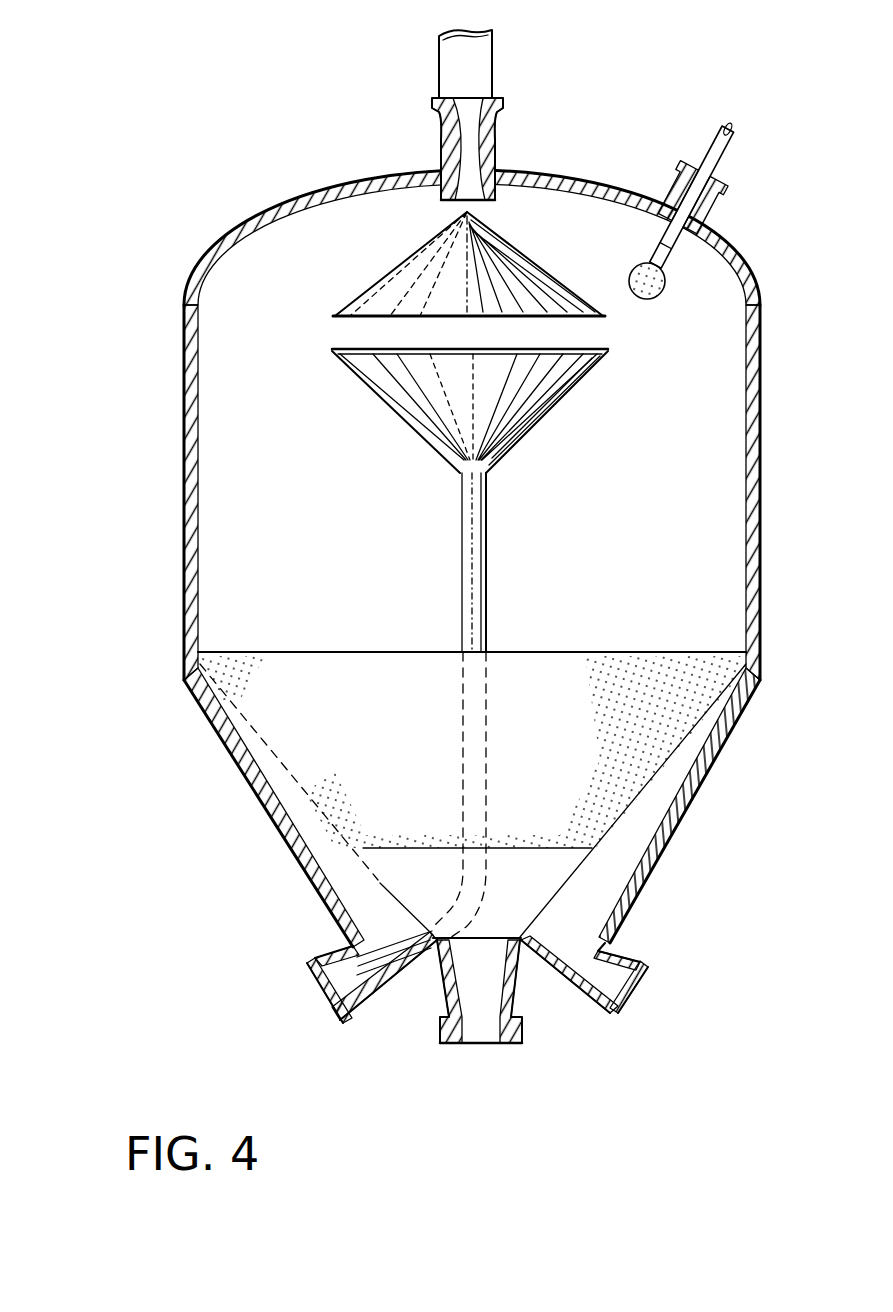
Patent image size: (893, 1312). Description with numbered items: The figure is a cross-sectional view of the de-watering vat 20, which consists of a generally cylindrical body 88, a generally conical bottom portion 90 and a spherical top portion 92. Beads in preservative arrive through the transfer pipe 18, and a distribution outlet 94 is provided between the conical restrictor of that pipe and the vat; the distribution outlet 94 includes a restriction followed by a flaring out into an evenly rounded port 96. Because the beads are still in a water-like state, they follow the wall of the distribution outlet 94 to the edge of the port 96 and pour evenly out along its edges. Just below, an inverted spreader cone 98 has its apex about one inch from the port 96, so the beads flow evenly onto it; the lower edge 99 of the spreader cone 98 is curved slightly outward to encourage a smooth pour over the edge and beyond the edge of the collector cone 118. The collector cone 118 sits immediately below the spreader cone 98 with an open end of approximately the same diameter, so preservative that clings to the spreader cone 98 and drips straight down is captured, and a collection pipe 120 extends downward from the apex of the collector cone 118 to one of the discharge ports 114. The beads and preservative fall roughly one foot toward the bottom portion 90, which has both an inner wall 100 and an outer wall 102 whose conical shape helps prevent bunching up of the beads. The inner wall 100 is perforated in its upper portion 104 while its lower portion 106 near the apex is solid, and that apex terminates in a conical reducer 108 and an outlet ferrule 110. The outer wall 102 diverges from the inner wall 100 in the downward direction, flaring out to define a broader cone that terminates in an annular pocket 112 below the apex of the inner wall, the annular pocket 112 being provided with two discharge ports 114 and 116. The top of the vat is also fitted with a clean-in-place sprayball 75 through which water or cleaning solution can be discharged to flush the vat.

The transfer pipe 18 is at (503, 57).
The de-watering vat 20 is at (403, 558).
The sprayball 75 is at (663, 297).
The cylindrical body 88 is at (183, 433).
The conical bottom portion 90 is at (268, 816).
The spherical top portion 92 is at (250, 218).
The distribution outlet 94 is at (437, 145).
The port 96 is at (492, 201).
The spreader cone 98 is at (403, 267).
The lower edge 99 is at (333, 315).
The inner wall 100 is at (615, 838).
The outer wall 102 is at (665, 808).
The upper portion 104 is at (352, 682).
The lower portion 106 is at (380, 883).
The conical reducer 108 is at (521, 982).
The outlet ferrule 110 is at (440, 1025).
The annular pocket 112 is at (567, 953).
The discharge port 114 is at (310, 950).
The discharge port 116 is at (648, 978).
The collector cone 118 is at (392, 402).
The collection pipe 120 is at (455, 578).